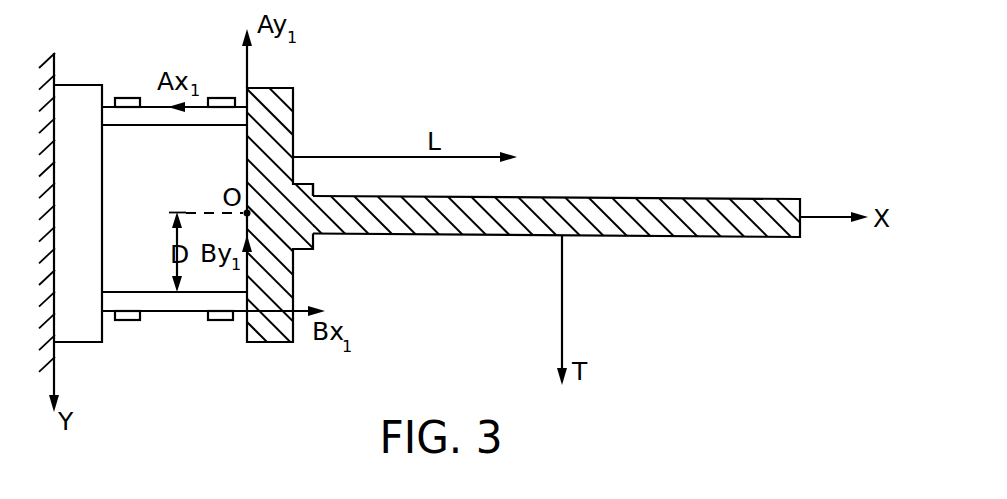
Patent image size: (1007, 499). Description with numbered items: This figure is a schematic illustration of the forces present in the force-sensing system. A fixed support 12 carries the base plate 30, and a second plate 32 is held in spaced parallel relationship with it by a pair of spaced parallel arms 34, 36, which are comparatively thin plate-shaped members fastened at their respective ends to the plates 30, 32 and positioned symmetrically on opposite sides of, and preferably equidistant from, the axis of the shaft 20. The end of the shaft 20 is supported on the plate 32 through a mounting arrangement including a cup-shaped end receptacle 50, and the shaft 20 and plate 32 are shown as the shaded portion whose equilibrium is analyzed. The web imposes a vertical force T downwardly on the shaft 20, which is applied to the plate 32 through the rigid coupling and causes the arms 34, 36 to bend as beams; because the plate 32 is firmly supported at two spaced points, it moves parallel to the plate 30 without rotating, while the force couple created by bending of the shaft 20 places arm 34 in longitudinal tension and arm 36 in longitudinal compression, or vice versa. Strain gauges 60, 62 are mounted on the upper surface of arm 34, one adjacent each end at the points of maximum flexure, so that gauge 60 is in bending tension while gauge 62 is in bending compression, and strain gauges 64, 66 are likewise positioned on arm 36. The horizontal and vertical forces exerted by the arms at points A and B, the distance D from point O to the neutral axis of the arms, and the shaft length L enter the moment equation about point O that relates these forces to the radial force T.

The wall / fixed support 12 is at (55, 60).
The shaft 20 is at (667, 197).
The base plate 30 is at (88, 333).
The plate 32 is at (285, 113).
The arm 34 is at (148, 118).
The arm 36 is at (158, 297).
The cup-shaped end receptacle 50 is at (315, 248).
The strain gauge 60 is at (125, 97).
The strain gauge 62 is at (220, 97).
The strain gauge 64 is at (130, 323).
The strain gauge 66 is at (227, 323).